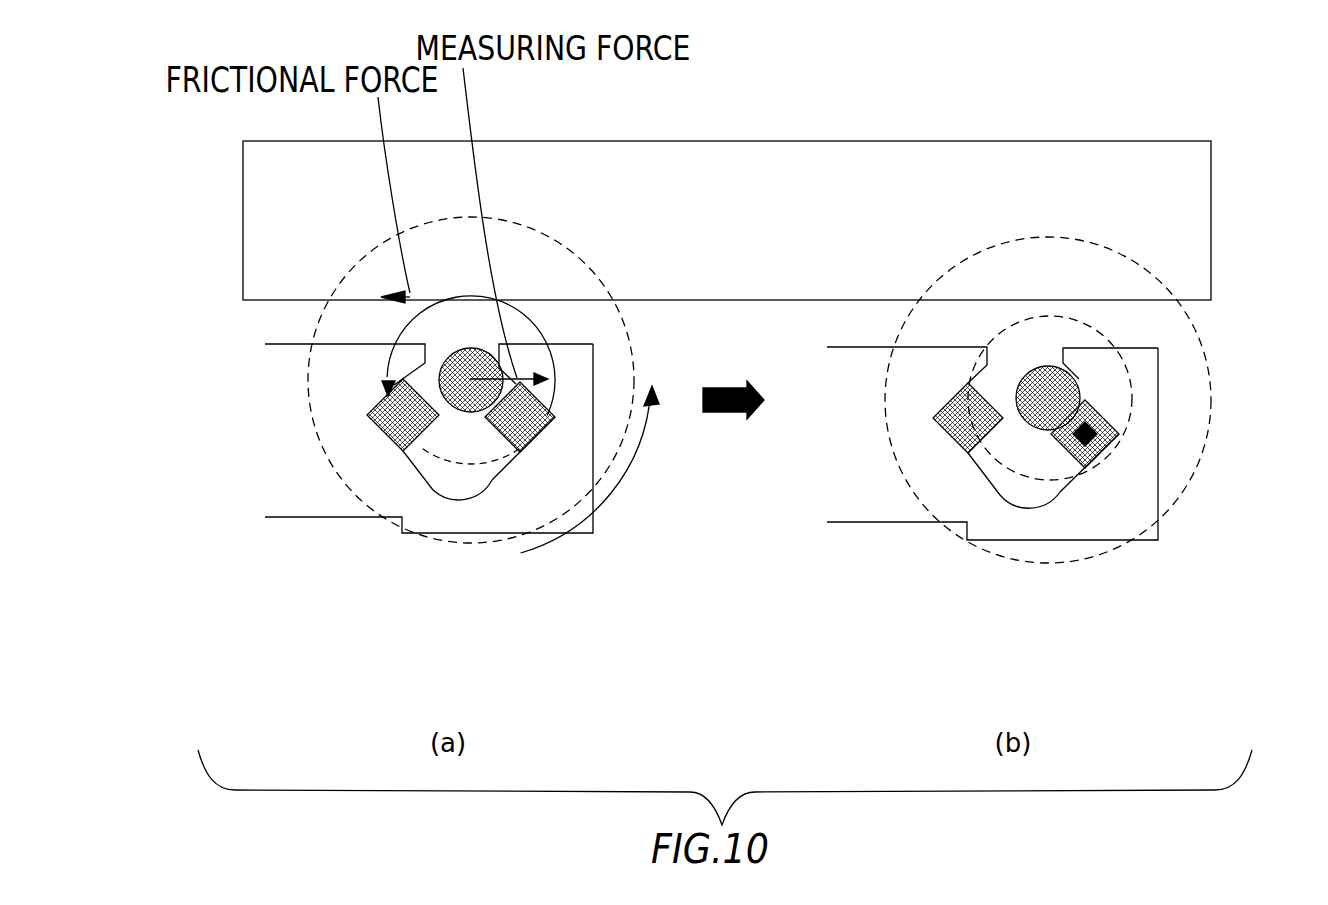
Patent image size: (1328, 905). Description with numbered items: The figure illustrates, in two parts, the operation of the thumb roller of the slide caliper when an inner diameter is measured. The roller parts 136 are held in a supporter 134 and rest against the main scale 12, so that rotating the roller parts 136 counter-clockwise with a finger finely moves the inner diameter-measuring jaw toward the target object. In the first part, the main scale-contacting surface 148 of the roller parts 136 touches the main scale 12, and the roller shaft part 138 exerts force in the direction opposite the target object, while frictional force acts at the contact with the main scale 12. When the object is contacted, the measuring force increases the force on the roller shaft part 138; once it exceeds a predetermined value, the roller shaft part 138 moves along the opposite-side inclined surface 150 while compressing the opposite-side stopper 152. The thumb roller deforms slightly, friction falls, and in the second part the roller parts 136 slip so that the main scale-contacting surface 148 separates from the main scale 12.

The main scale 12 is at (745, 141).
The supporter 134 is at (285, 345).
The roller parts 136 is at (340, 478).
The roller shaft part 138 is at (472, 413).
The main scale-contacting surface 148 is at (447, 460).
The opposite-side inclined surface 150 is at (547, 398).
The opposite-side stopper 152 is at (500, 430).